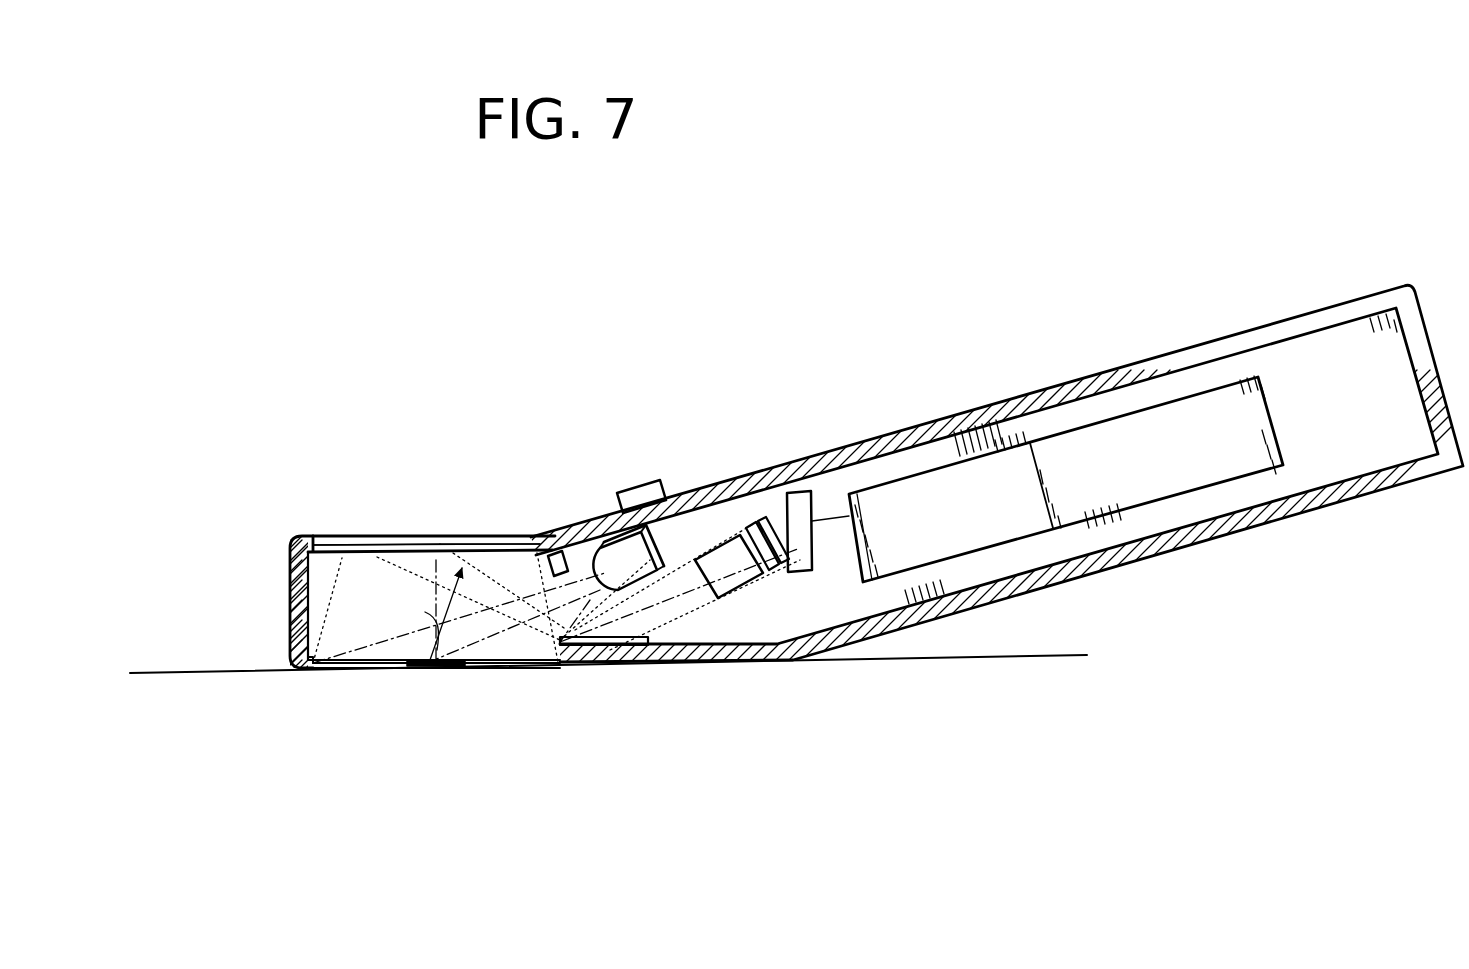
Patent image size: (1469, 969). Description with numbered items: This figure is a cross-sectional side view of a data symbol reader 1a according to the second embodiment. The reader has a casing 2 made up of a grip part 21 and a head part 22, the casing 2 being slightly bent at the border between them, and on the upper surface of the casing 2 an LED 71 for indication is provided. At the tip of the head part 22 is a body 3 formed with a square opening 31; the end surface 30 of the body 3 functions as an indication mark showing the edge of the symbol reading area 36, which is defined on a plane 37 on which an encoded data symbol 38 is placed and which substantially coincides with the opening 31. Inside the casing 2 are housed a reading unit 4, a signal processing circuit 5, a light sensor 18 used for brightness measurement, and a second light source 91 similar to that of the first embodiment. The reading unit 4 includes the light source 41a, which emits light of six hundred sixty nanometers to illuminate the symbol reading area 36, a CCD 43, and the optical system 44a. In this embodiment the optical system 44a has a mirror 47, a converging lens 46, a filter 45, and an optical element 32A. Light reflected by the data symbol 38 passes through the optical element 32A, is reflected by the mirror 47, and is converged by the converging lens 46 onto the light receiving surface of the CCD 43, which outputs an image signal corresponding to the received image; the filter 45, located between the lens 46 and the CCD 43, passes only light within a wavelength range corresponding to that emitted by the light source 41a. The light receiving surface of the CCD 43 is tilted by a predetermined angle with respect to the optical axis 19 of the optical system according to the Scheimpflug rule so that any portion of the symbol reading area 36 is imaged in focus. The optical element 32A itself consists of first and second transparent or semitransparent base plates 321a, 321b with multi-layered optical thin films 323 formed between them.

The data symbol reader 1a is at (872, 296).
The casing 2 is at (734, 488).
The body 3 is at (287, 592).
The reading unit 4 is at (736, 530).
The signal processing circuit 5 is at (1036, 514).
The light sensor 18 is at (554, 556).
The optical axis 19 is at (428, 648).
The grip part 21 is at (1116, 370).
The head part 22 is at (282, 532).
The end surface 30 is at (300, 672).
The opening 31 is at (498, 668).
The optical element 32A is at (348, 532).
The symbol reading area 36 is at (360, 670).
The plane 37 is at (231, 675).
The data symbol 38 is at (440, 668).
The light source 41a is at (603, 556).
The CCD 43 is at (815, 572).
The optical system 44a is at (704, 540).
The filter 45 is at (789, 568).
The converging lens 46 is at (747, 582).
The mirror 47 is at (625, 650).
The LED 71 is at (641, 492).
The second light source 91 is at (607, 545).
The first base plate 321a is at (447, 552).
The second base plate 321b is at (492, 546).
The multi-layered optical thin films 323 is at (390, 537).